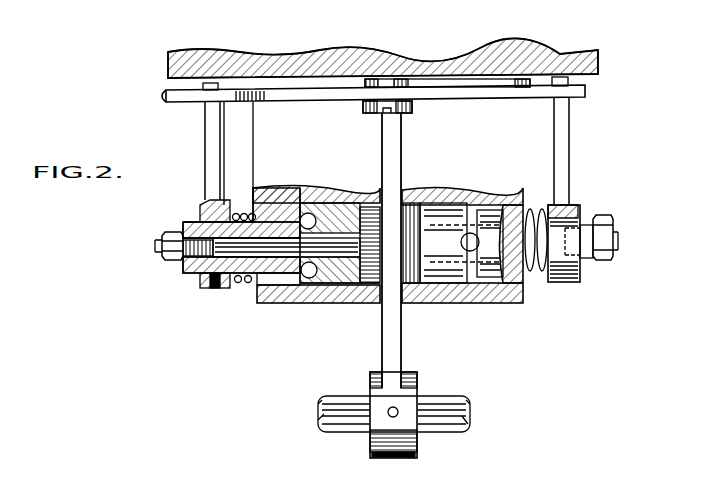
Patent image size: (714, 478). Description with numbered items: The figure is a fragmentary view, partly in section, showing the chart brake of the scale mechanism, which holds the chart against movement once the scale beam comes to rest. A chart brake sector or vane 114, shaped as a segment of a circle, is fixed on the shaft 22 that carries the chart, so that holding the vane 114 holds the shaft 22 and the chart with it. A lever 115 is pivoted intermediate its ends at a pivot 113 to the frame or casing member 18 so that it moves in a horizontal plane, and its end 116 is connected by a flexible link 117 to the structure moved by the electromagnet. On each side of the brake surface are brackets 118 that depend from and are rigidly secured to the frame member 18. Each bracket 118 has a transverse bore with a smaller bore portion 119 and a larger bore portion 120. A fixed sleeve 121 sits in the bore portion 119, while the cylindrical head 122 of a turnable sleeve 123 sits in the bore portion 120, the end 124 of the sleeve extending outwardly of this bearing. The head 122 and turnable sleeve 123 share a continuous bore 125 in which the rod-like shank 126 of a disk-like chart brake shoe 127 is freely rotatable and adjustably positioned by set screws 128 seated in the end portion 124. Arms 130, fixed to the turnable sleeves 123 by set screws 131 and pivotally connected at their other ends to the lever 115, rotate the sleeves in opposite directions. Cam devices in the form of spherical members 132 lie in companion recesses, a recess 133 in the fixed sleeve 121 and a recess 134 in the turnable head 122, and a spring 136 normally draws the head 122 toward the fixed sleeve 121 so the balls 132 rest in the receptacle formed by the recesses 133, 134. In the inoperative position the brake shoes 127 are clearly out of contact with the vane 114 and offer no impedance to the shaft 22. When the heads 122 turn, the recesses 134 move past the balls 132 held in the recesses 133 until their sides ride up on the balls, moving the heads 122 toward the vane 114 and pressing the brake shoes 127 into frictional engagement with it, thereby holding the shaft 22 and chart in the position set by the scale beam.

The frame or casing member 18 is at (545, 57).
The shaft 22 is at (432, 425).
The pivot 113 is at (413, 108).
The chart brake sector or vane 114 is at (401, 352).
The lever 115 is at (585, 92).
The end of lever 116 is at (186, 102).
The flexible link 117 is at (162, 98).
The bracket 118 is at (256, 136).
The bore portion 119 is at (290, 305).
The bore portion 120 is at (333, 304).
The fixed sleeve 121 is at (486, 208).
The cylindrical head 122 is at (347, 200).
The turnable sleeve 123 is at (284, 306).
The end of turnable sleeve 124 is at (196, 275).
The continuous bore 125 is at (247, 284).
The rod-like shank 126 is at (282, 248).
The chart brake shoe 127 is at (411, 205).
The set screw 128 is at (160, 250).
The arm 130 is at (206, 181).
The set screw 131 is at (215, 290).
The spherical member 132 is at (480, 243).
The recess 133 is at (308, 212).
The recess 134 is at (323, 205).
The spring 136 is at (240, 212).